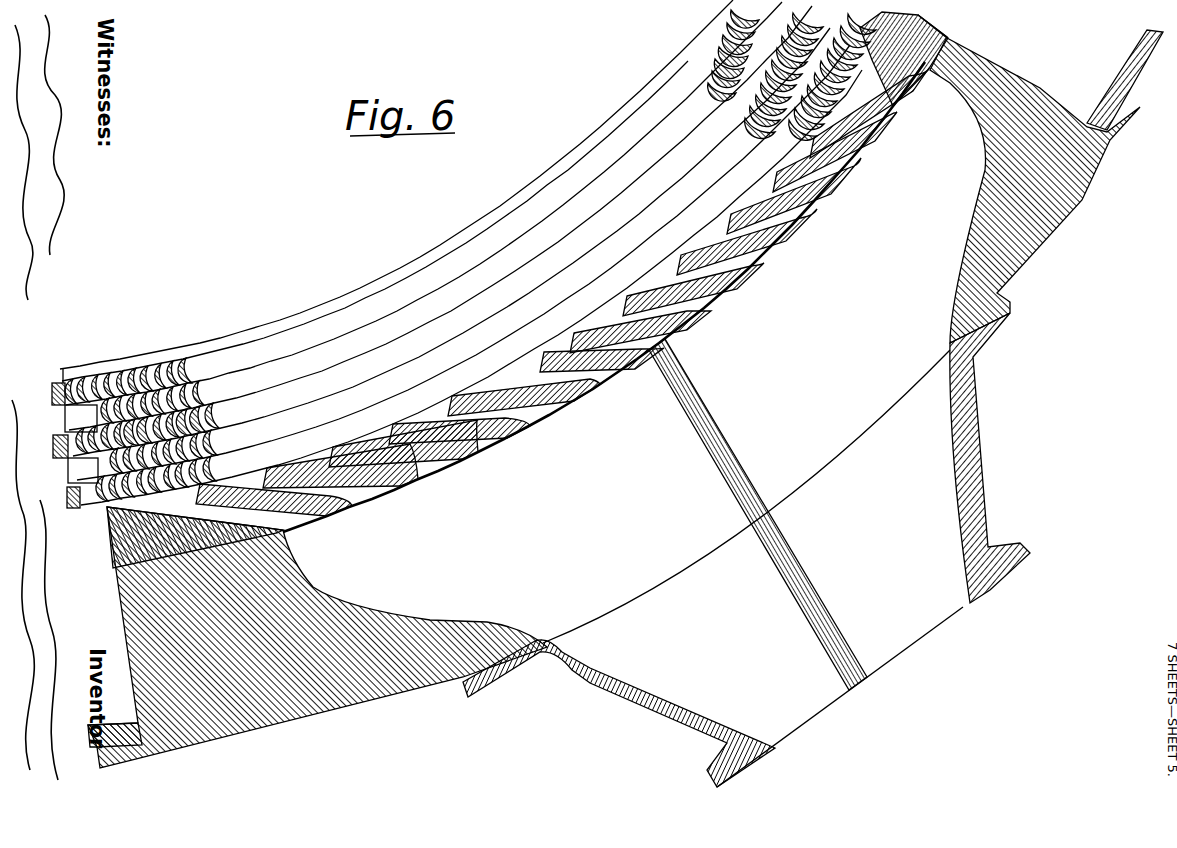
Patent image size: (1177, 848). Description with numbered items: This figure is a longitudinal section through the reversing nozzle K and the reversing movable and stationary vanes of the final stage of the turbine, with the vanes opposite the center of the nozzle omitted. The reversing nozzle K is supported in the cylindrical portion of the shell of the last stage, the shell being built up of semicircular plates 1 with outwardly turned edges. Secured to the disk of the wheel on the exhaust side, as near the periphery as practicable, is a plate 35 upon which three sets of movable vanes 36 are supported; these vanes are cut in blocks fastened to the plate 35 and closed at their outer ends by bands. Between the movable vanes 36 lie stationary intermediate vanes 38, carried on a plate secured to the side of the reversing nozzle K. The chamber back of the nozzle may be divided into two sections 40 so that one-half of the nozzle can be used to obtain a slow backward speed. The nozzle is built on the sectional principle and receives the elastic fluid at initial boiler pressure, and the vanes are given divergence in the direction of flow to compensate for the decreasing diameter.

The semicircular plates 1 is at (1125, 64).
The plate 35 is at (80, 420).
The movable vanes 36 is at (67, 497).
The stationary intermediate vanes 38 is at (468, 252).
The sections 40 is at (753, 385).
The reversing nozzle K is at (712, 350).